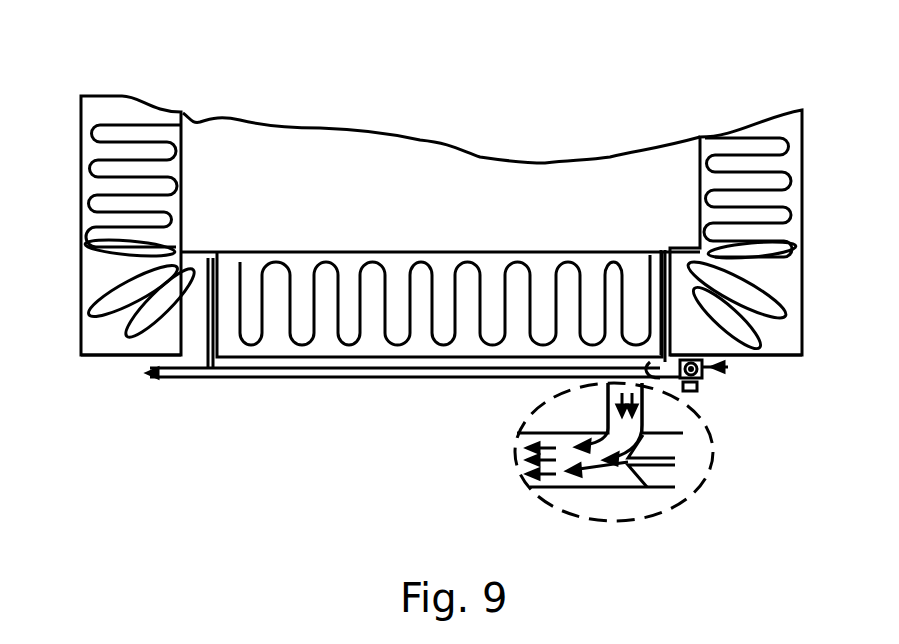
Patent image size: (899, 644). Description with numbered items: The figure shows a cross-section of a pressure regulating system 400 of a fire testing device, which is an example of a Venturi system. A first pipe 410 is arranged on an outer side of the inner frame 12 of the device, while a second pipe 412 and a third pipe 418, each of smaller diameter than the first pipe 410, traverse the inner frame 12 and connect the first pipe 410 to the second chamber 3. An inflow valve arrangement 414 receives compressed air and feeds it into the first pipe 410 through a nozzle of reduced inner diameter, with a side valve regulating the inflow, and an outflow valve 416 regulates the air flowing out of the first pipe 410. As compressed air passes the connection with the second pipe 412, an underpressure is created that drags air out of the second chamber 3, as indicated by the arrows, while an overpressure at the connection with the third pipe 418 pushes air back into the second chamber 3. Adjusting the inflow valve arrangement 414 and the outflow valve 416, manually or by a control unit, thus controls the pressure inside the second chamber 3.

The inner frame 12 is at (72, 168).
The second chamber 3 is at (518, 185).
The pressure regulating system 400 is at (480, 410).
The first pipe 410 is at (388, 372).
The second pipe 412 is at (670, 308).
The inflow valve arrangement 414 is at (702, 378).
The outflow valve 416 is at (152, 377).
The third pipe 418 is at (213, 310).